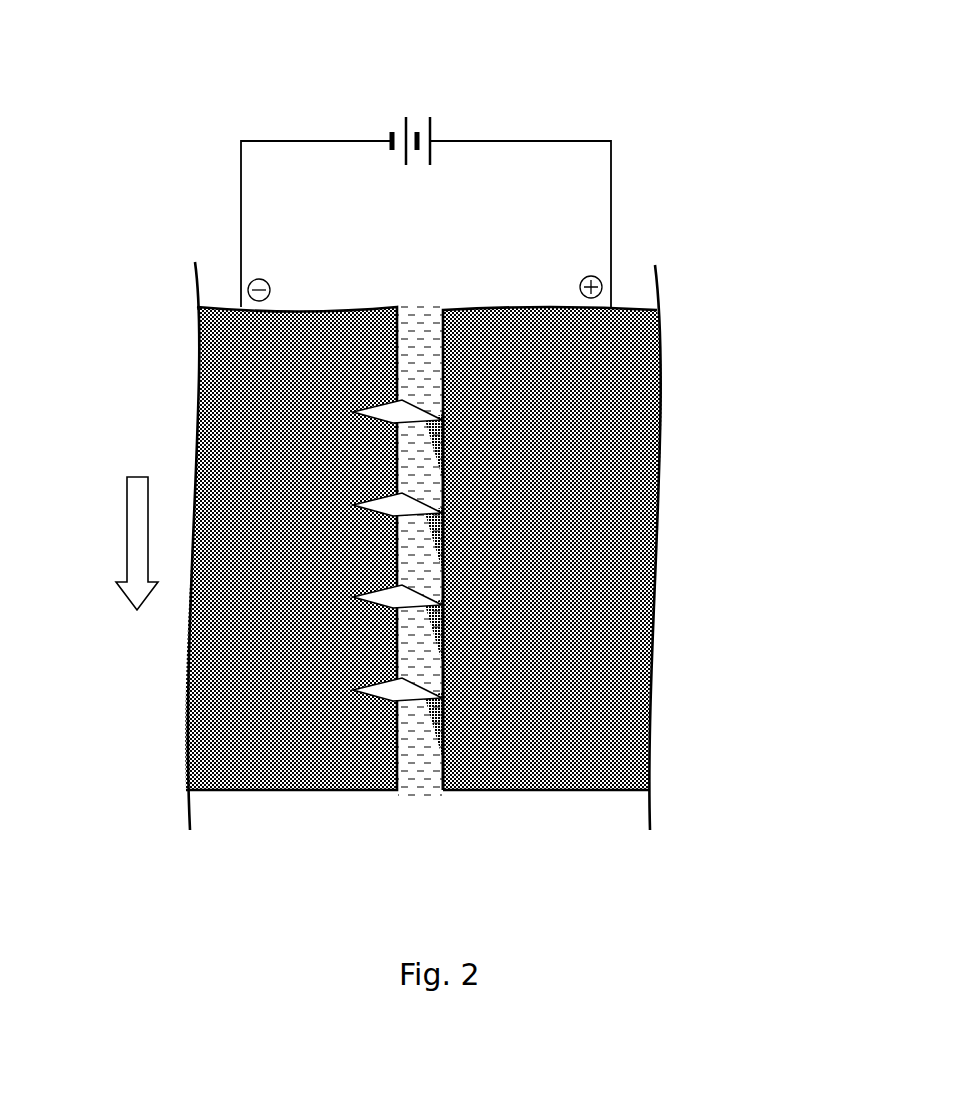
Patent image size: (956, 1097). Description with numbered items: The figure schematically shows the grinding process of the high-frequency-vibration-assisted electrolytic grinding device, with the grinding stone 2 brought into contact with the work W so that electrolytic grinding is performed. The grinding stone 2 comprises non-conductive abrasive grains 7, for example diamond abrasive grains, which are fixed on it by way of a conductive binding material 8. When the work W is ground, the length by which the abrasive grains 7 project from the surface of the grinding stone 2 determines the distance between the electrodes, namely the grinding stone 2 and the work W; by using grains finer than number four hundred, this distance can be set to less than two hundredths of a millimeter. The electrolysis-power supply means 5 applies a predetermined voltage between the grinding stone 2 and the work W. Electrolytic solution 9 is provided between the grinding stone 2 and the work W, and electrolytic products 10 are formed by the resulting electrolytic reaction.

The grinding stone 2 is at (314, 795).
The electrolysis-power supply means 5 is at (430, 117).
The abrasive grain 7 is at (390, 405).
The conductive binding material 8 is at (245, 433).
The electrolytic solution 9 is at (414, 337).
The electrolytic products 10 is at (441, 420).
The work W is at (555, 795).